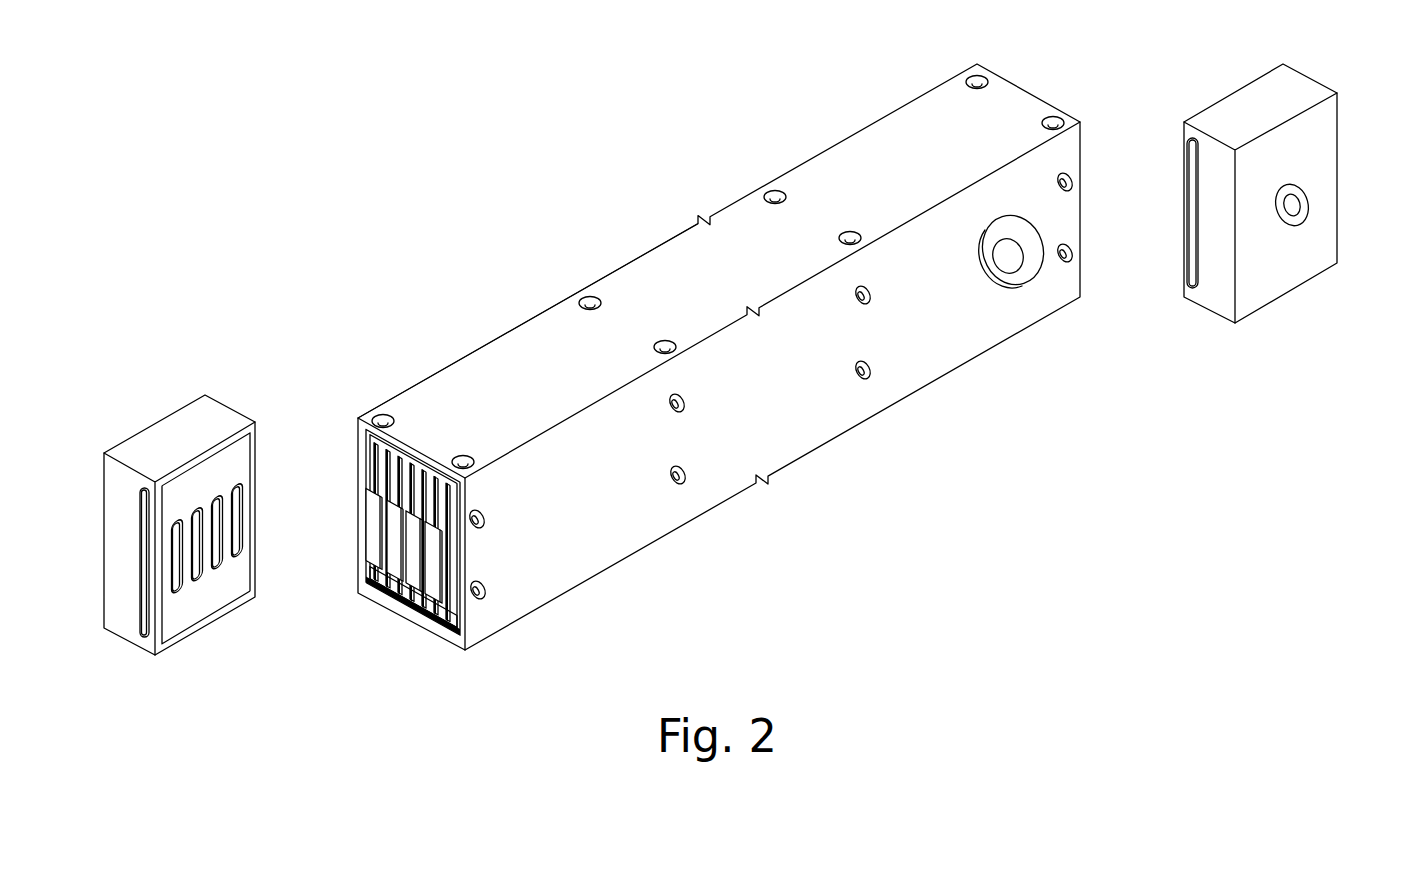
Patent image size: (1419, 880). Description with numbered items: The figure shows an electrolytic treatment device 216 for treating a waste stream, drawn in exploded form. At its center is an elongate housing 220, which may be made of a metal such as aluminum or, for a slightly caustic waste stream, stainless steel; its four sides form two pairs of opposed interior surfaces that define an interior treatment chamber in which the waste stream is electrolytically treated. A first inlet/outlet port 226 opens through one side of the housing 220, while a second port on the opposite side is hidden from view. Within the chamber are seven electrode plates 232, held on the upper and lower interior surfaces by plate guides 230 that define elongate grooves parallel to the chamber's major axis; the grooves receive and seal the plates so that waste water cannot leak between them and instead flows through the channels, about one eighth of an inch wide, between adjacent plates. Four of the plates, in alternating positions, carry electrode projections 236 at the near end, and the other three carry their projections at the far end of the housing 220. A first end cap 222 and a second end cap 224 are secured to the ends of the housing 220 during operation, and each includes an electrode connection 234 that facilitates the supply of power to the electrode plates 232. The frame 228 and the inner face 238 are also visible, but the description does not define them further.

The electrolytic treatment device 216 is at (706, 198).
The elongate housing 220 is at (733, 288).
The first end cap 222 is at (167, 412).
The second end cap 224 is at (1268, 302).
The first inlet/outlet port 226 is at (1003, 290).
The end face frame 228 is at (358, 520).
The plate guides 230 is at (400, 445).
The electrode plates 232 is at (437, 637).
The electrode connection 234 is at (103, 528).
The electrode projections 236 is at (372, 537).
The end cap inner face with slots 238 is at (192, 607).